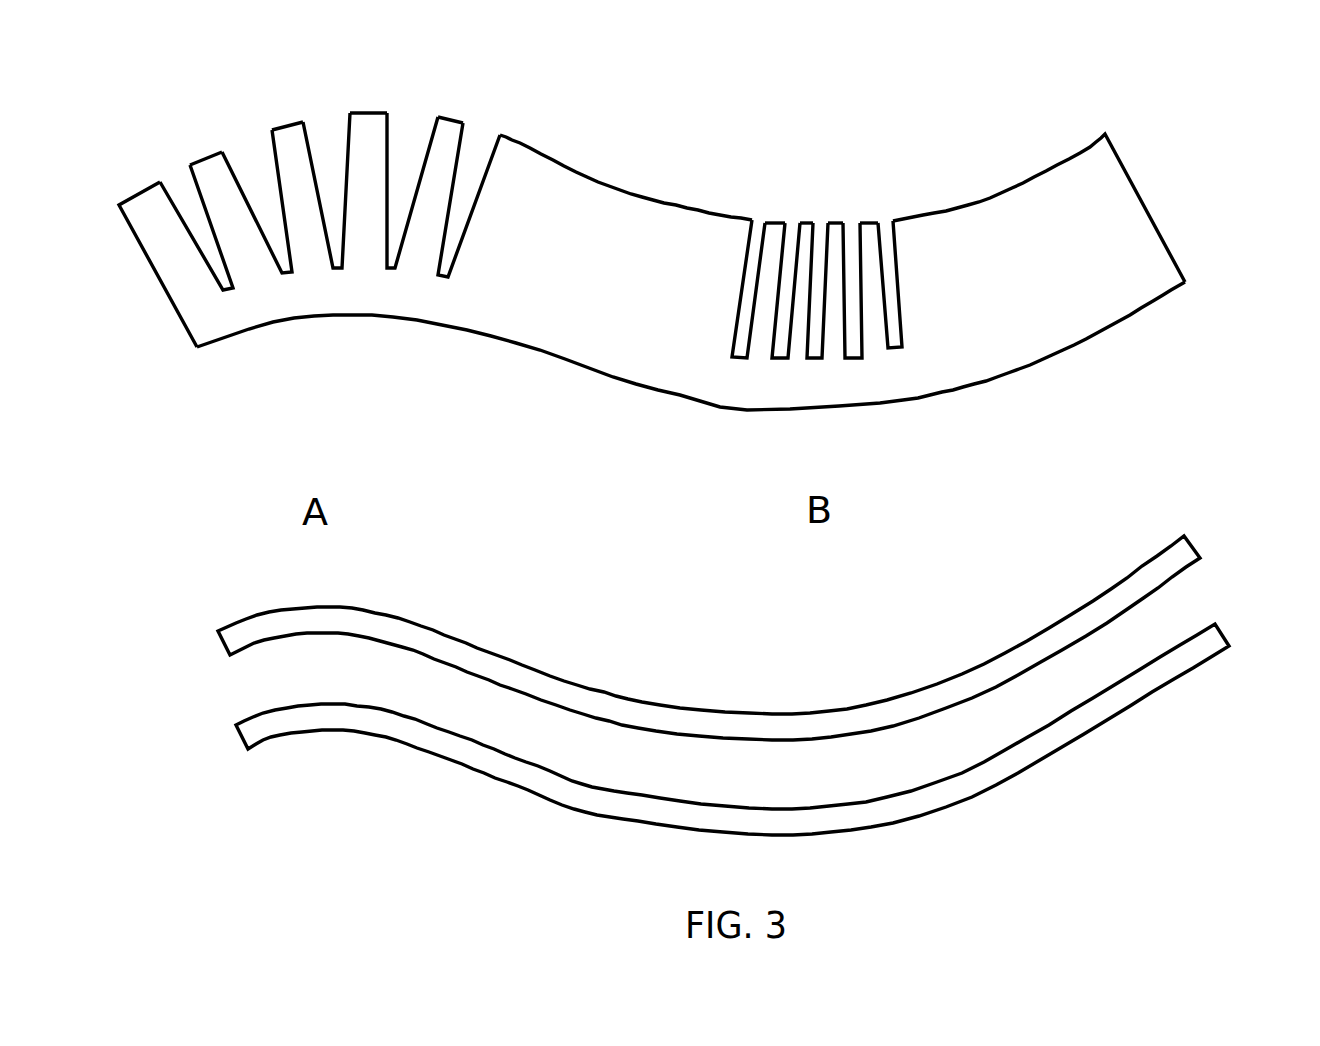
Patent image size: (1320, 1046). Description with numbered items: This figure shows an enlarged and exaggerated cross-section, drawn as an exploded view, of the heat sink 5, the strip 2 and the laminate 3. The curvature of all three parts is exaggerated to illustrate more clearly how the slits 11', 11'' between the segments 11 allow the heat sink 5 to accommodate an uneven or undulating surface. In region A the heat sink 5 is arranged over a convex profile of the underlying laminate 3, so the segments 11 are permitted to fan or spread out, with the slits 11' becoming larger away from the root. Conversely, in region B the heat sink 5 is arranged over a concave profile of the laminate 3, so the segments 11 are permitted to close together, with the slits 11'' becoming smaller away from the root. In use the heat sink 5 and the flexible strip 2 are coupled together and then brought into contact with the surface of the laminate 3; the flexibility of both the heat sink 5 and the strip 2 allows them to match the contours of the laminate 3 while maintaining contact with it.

The heat sink 5 is at (1133, 182).
The segments 11 is at (534, 293).
The slits 11' is at (330, 174).
The slits 11'' is at (817, 245).
The strip 2 is at (1194, 550).
The laminate 3 is at (1226, 638).